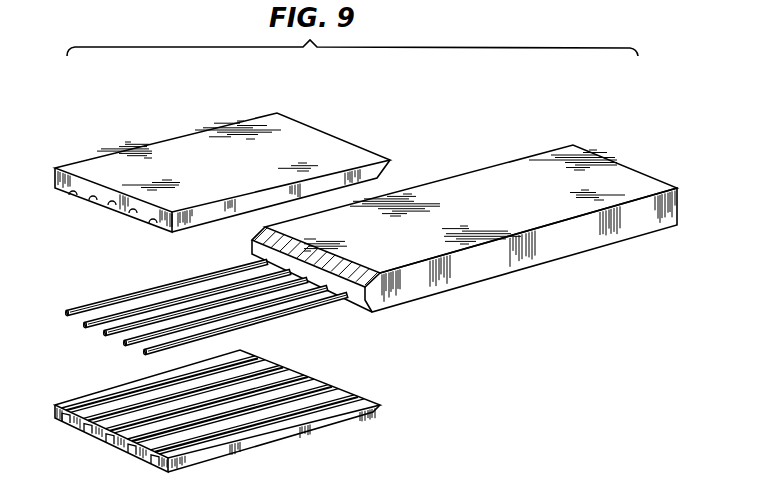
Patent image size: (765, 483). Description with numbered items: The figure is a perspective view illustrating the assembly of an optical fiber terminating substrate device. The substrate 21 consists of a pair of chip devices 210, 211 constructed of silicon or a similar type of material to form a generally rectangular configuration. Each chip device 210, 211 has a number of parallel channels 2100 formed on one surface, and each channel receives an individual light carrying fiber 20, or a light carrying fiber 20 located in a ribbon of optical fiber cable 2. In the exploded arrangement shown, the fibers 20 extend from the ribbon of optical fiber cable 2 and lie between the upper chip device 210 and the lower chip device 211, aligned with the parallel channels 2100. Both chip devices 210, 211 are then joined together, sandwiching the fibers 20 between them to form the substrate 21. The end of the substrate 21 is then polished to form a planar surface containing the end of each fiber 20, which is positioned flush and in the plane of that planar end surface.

The ribbon of optical fiber cable 2 is at (464, 183).
The light carrying fiber 20 is at (93, 305).
The substrate 21 is at (548, 327).
The chip device 210 is at (168, 150).
The chip device 211 is at (298, 427).
The parallel channels 2100 is at (135, 217).